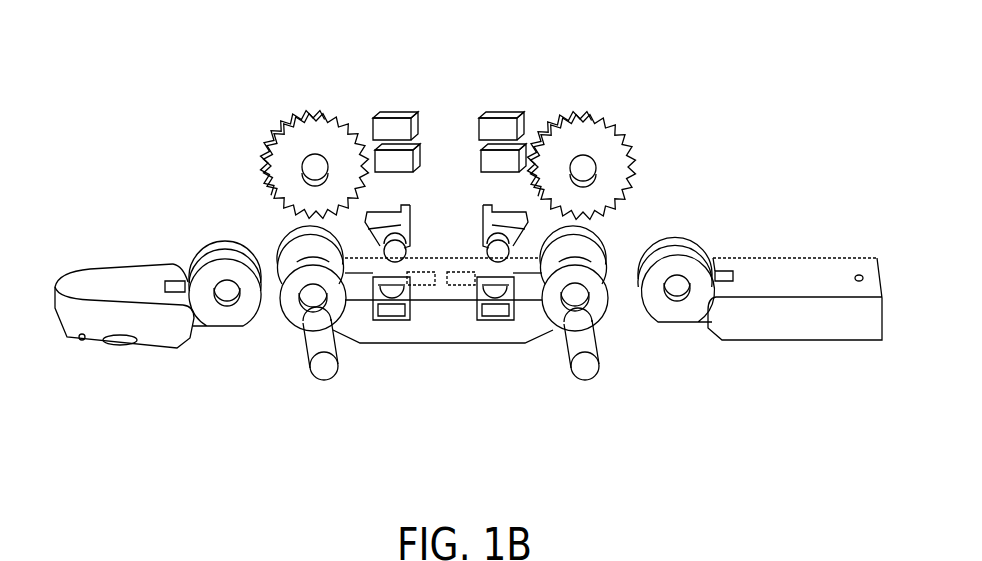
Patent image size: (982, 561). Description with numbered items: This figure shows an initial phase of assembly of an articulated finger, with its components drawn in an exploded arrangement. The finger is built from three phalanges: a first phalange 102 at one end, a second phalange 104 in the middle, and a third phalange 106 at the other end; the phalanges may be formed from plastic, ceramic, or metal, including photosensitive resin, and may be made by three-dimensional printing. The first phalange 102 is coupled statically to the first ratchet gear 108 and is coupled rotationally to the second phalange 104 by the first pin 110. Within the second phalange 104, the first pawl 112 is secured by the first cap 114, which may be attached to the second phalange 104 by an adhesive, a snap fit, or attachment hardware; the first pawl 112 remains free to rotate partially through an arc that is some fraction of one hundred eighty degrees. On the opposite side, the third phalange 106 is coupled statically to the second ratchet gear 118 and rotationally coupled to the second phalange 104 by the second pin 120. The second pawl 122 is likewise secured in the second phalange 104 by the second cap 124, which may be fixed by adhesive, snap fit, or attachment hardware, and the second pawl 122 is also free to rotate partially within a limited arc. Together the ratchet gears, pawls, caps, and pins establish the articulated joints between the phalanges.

The first phalange 102 is at (95, 327).
The second phalange 104 is at (442, 327).
The third phalange 106 is at (810, 318).
The first ratchet gear 108 is at (306, 138).
The first pin 110 is at (322, 363).
The first pawl 112 is at (408, 226).
The first cap 114 is at (391, 119).
The second ratchet gear 118 is at (598, 142).
The second pin 120 is at (582, 367).
The second pawl 122 is at (519, 226).
The second cap 124 is at (498, 117).